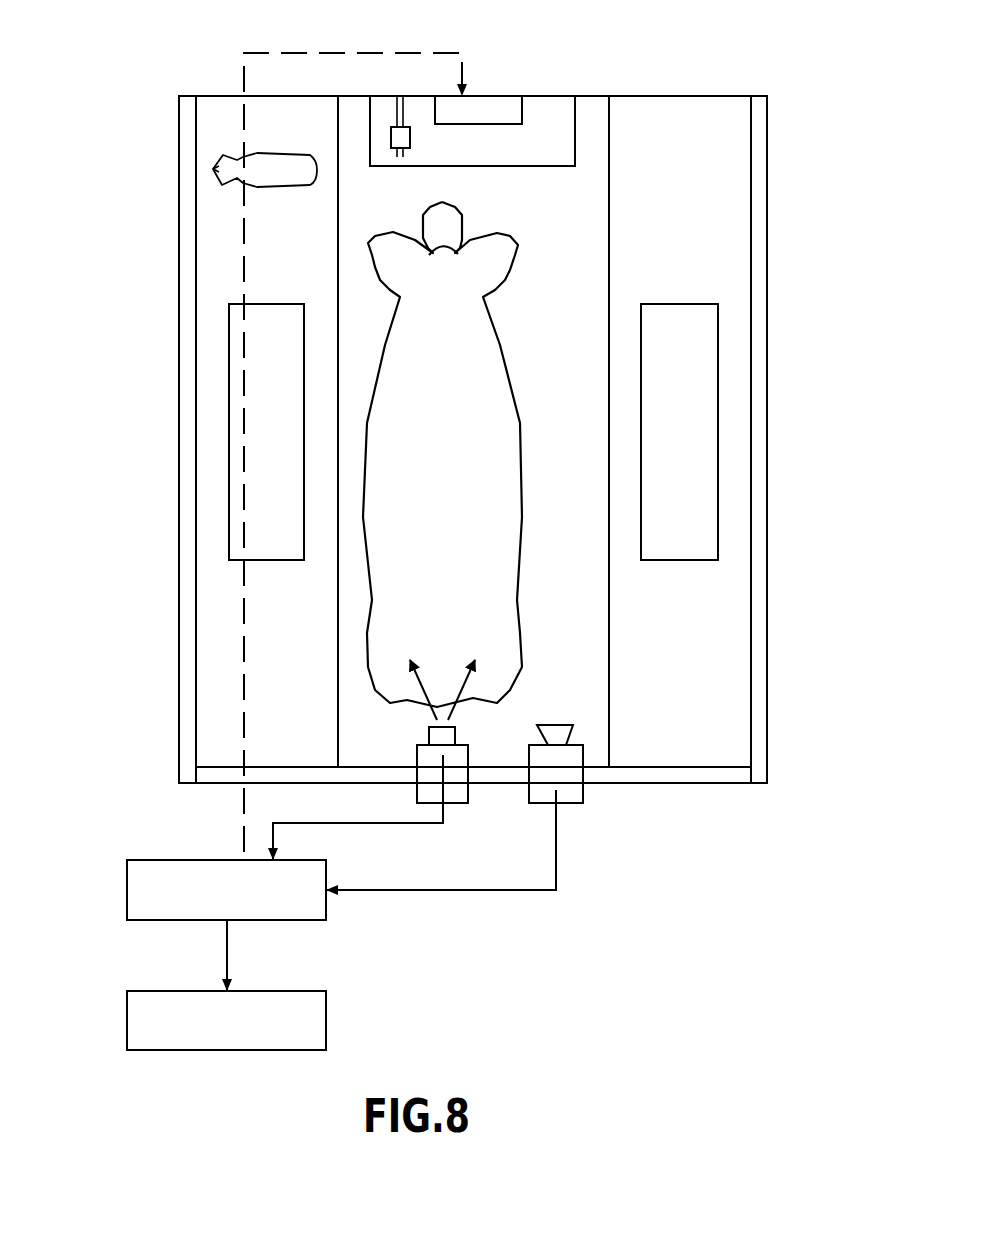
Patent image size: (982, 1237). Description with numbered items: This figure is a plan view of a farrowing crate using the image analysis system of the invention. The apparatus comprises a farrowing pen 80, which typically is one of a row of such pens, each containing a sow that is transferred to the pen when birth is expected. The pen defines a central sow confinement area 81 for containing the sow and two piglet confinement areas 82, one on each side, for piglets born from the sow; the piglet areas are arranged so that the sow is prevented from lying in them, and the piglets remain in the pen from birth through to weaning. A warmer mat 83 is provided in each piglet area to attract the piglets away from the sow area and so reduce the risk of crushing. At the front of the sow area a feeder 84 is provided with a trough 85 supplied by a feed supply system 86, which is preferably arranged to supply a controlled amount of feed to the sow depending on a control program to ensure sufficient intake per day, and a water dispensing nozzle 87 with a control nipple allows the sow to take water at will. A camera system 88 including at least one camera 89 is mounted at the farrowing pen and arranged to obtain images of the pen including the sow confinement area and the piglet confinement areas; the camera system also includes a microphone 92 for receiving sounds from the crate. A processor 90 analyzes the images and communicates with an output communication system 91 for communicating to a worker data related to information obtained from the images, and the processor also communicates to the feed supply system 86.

The farrowing pen 80 is at (188, 505).
The sow confinement area 81 is at (565, 652).
The piglet confinement areas 82 is at (265, 672).
The warmer mat 83 is at (255, 432).
The feeder 84 is at (545, 125).
The trough 85 is at (562, 126).
The feed supply system 86 is at (473, 104).
The water dispensing nozzle 87 is at (403, 115).
The camera system 88 is at (568, 793).
The camera 89 is at (458, 758).
The processor 90 is at (128, 900).
The output communication system 91 is at (128, 1025).
The microphone 92 is at (572, 755).